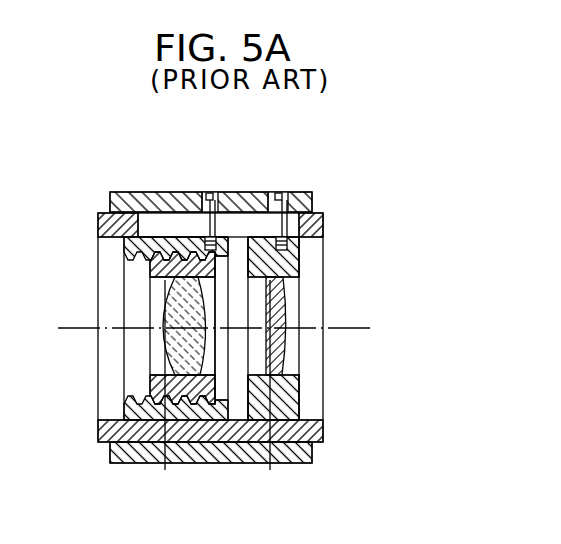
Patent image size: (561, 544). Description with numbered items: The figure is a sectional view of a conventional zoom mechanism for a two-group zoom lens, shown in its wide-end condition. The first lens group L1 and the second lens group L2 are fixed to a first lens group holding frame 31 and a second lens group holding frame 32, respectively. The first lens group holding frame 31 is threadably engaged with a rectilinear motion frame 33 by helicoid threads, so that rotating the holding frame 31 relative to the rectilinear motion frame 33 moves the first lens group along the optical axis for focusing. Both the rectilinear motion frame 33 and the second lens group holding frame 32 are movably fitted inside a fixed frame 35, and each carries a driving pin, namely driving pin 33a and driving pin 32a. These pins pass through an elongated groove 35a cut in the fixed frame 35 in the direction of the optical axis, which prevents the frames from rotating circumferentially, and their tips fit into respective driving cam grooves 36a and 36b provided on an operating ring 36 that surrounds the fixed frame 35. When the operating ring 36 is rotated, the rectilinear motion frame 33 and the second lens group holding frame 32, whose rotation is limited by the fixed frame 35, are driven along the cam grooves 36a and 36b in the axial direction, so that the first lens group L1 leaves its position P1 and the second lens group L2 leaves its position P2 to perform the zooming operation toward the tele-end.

The first lens group holding frame 31 is at (158, 270).
The second lens group holding frame 32 is at (293, 262).
The driving pin 32a is at (272, 178).
The rectilinear motion frame 33 is at (127, 244).
The driving pin 33a is at (202, 192).
The fixed frame 35 is at (324, 223).
The elongated groove 35a is at (316, 241).
The operating ring 36 is at (302, 199).
The driving cam groove 36a is at (212, 192).
The driving cam groove 36b is at (283, 192).
The first lens group L1 is at (176, 301).
The second lens group L2 is at (282, 339).
The position of the first lens group P1 is at (167, 392).
The position of the second lens group P2 is at (270, 392).